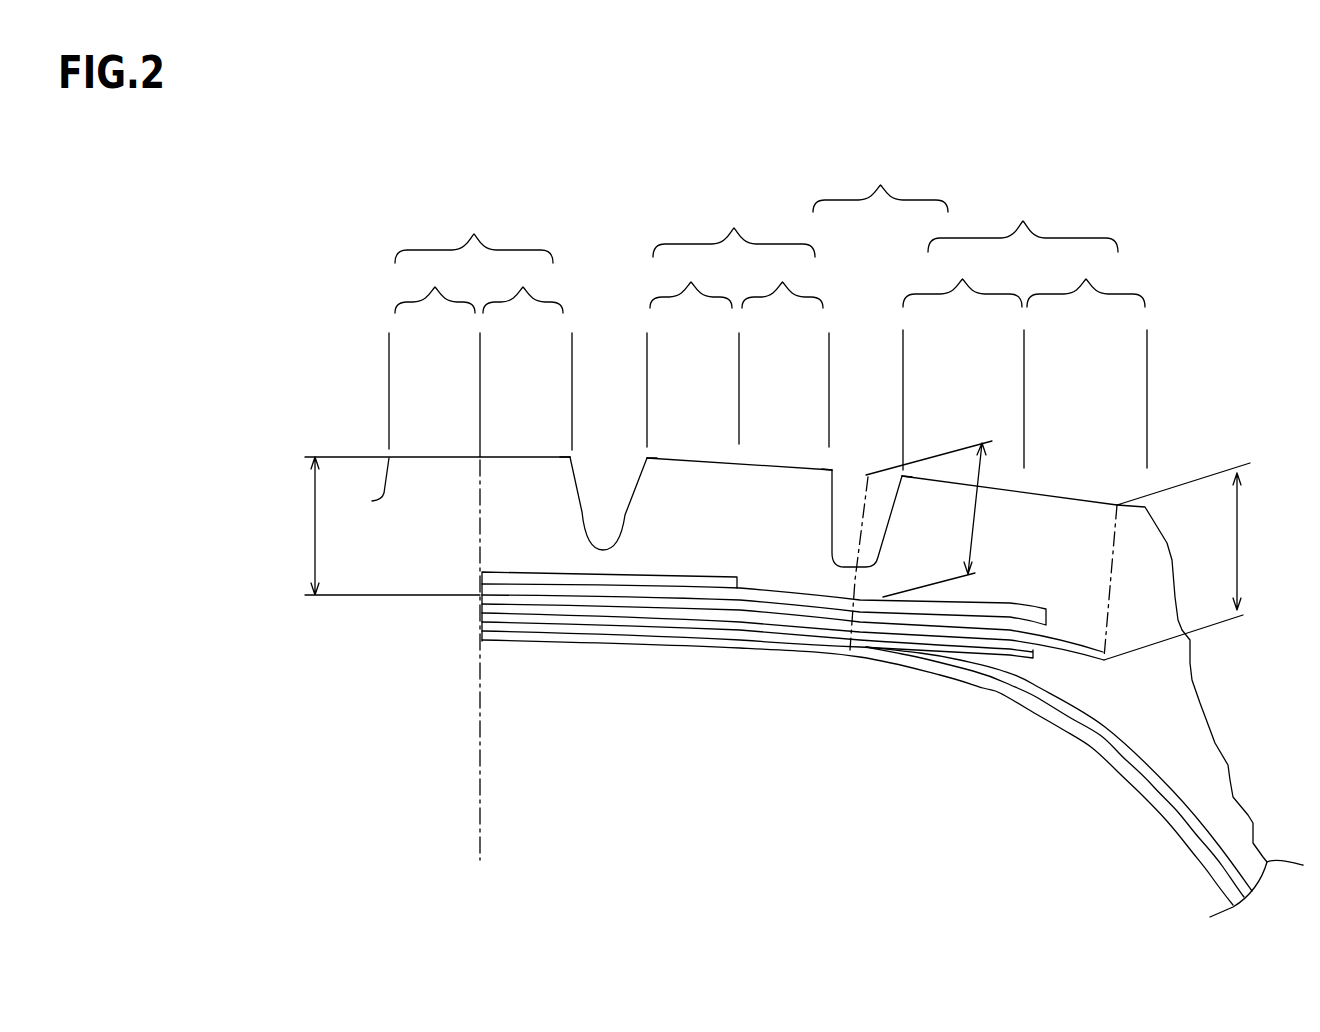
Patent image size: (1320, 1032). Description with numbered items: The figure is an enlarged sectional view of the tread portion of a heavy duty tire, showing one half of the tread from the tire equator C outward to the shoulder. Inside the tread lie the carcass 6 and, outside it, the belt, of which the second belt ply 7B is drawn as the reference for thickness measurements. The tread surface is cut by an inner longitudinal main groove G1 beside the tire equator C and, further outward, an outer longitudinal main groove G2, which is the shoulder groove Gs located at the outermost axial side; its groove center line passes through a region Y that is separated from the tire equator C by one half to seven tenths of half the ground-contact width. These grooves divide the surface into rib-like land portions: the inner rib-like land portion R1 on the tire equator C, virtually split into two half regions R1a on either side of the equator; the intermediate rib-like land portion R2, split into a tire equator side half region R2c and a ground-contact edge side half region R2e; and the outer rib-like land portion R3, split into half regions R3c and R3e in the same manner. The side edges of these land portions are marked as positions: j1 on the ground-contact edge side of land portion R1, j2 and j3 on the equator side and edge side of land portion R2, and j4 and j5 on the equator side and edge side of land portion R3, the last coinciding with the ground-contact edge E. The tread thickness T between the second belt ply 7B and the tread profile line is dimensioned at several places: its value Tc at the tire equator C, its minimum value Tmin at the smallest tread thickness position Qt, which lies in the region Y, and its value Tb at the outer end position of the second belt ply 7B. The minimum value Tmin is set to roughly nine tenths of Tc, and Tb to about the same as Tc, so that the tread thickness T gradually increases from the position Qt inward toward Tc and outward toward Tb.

The inner rib-like land portion R1 is at (474, 233).
The half region of inner rib-like land portion R1a is at (467, 381).
The intermediate rib-like land portion R2 is at (734, 228).
The tire equator side half region of intermediate rib-like land portion R2c is at (691, 282).
The ground-contact edge side half region of intermediate rib-like land portion R2e is at (782, 282).
The region Y is at (880, 179).
The outer rib-like land portion R3 is at (1023, 220).
The tire equator side half region of outer rib-like land portion R3c is at (962, 277).
The ground-contact edge side half region of outer rib-like land portion R3e is at (1086, 277).
The side edge position j1 is at (578, 448).
The side edge position j2 is at (647, 445).
The side edge position j3 is at (841, 461).
The side edge position j4 is at (902, 464).
The tread thickness T is at (359, 504).
The tread thickness at tire equator Tc is at (312, 527).
The minimum tread thickness Tmin is at (977, 510).
The ground-contact edge E is at (1205, 649).
The side edge position j5 is at (1147, 506).
The tread thickness at outer end of second belt ply Tb is at (1238, 543).
The inner longitudinal main groove G1 is at (612, 525).
The outer longitudinal main groove G2 is at (831, 598).
The shoulder groove Gs is at (843, 555).
The smallest tread thickness position Qt is at (852, 486).
The tire equator C is at (478, 790).
The second belt ply 7B is at (1070, 647).
The carcass 6 is at (1137, 763).